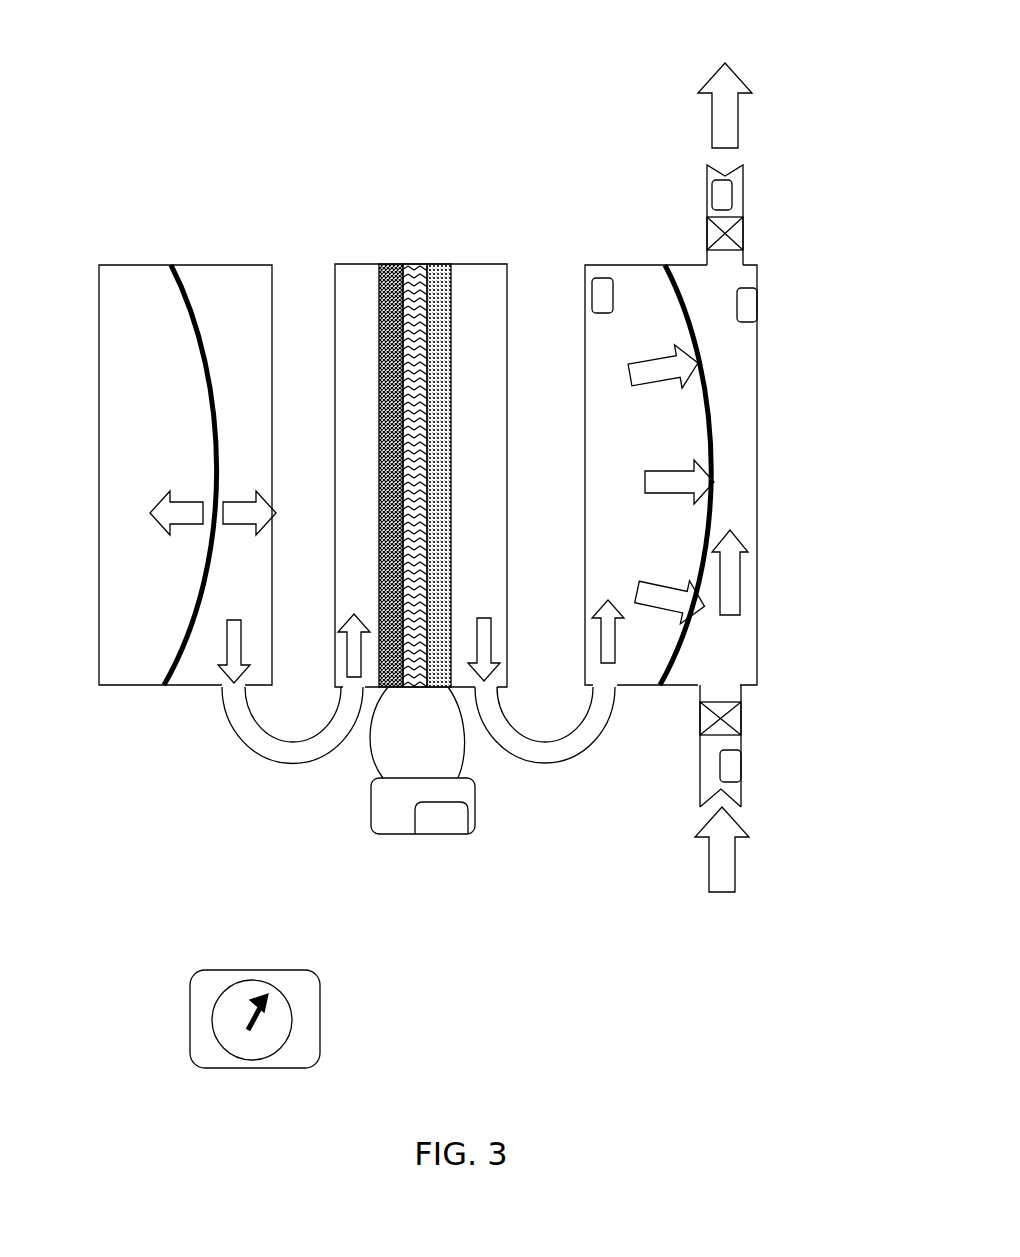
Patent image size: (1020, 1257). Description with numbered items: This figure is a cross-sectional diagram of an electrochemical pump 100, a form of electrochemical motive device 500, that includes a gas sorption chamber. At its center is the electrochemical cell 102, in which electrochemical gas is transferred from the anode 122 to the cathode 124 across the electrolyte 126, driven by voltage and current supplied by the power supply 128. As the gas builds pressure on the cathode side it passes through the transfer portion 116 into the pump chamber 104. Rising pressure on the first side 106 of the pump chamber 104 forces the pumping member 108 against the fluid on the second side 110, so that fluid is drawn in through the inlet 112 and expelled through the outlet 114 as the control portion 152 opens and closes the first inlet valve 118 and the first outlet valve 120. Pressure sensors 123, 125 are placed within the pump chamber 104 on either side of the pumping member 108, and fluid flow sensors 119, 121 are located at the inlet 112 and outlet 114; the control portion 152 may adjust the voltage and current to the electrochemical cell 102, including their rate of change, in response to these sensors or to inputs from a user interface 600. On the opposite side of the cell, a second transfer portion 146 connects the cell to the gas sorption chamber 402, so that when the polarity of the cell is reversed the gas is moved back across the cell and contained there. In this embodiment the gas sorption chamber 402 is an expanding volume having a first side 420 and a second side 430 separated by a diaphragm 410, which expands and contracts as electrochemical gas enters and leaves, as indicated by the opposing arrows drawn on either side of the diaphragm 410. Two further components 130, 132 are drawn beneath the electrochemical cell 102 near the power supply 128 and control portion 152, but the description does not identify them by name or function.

The electrochemical pump 100 is at (328, 178).
The electrochemical motive device 500 is at (500, 86).
The electrochemical cell 102 is at (455, 292).
The pump chamber 104 is at (758, 637).
The first side 106 is at (665, 300).
The pumping member 108 is at (693, 497).
The second side 110 is at (730, 377).
The inlet 112 is at (700, 797).
The outlet 114 is at (742, 183).
The transfer portion 116 is at (542, 757).
The first inlet valve 118 is at (702, 722).
The fluid flow sensor 119 is at (735, 762).
The first outlet valve 120 is at (720, 225).
The fluid flow sensor 121 is at (707, 167).
The anode 122 is at (386, 263).
The pressure sensor 123 is at (603, 282).
The cathode 124 is at (440, 263).
The pressure sensor 125 is at (750, 310).
The electrolyte 126 is at (417, 263).
The power supply 128 is at (405, 823).
The housing 130 is at (375, 722).
The pump 132 is at (517, 740).
The second transfer portion 146 is at (284, 745).
The control portion 152 is at (437, 823).
The gas sorption chamber 402 is at (97, 634).
The diaphragm 410 is at (215, 433).
The first side 420 is at (222, 320).
The second side 430 is at (158, 368).
The user interface 600 is at (287, 1028).